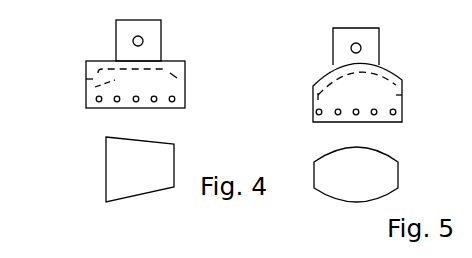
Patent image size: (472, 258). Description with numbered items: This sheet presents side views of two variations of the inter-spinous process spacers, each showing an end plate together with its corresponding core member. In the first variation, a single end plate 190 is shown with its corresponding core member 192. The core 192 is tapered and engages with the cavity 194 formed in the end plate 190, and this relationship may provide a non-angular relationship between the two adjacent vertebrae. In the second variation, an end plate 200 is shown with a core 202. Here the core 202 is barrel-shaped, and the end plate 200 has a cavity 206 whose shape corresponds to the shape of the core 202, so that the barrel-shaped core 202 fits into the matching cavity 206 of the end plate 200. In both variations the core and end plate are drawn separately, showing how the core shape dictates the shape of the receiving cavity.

In FIG. 4, the end plate 190 is at (97, 61).
In FIG. 4, the cavity 194 is at (90, 88).
In FIG. 4, the core member 192 is at (106, 165).
In FIG. 5, the end plate 200 is at (388, 72).
In FIG. 5, the cavity 206 is at (316, 102).
In FIG. 5, the core 202 is at (398, 174).